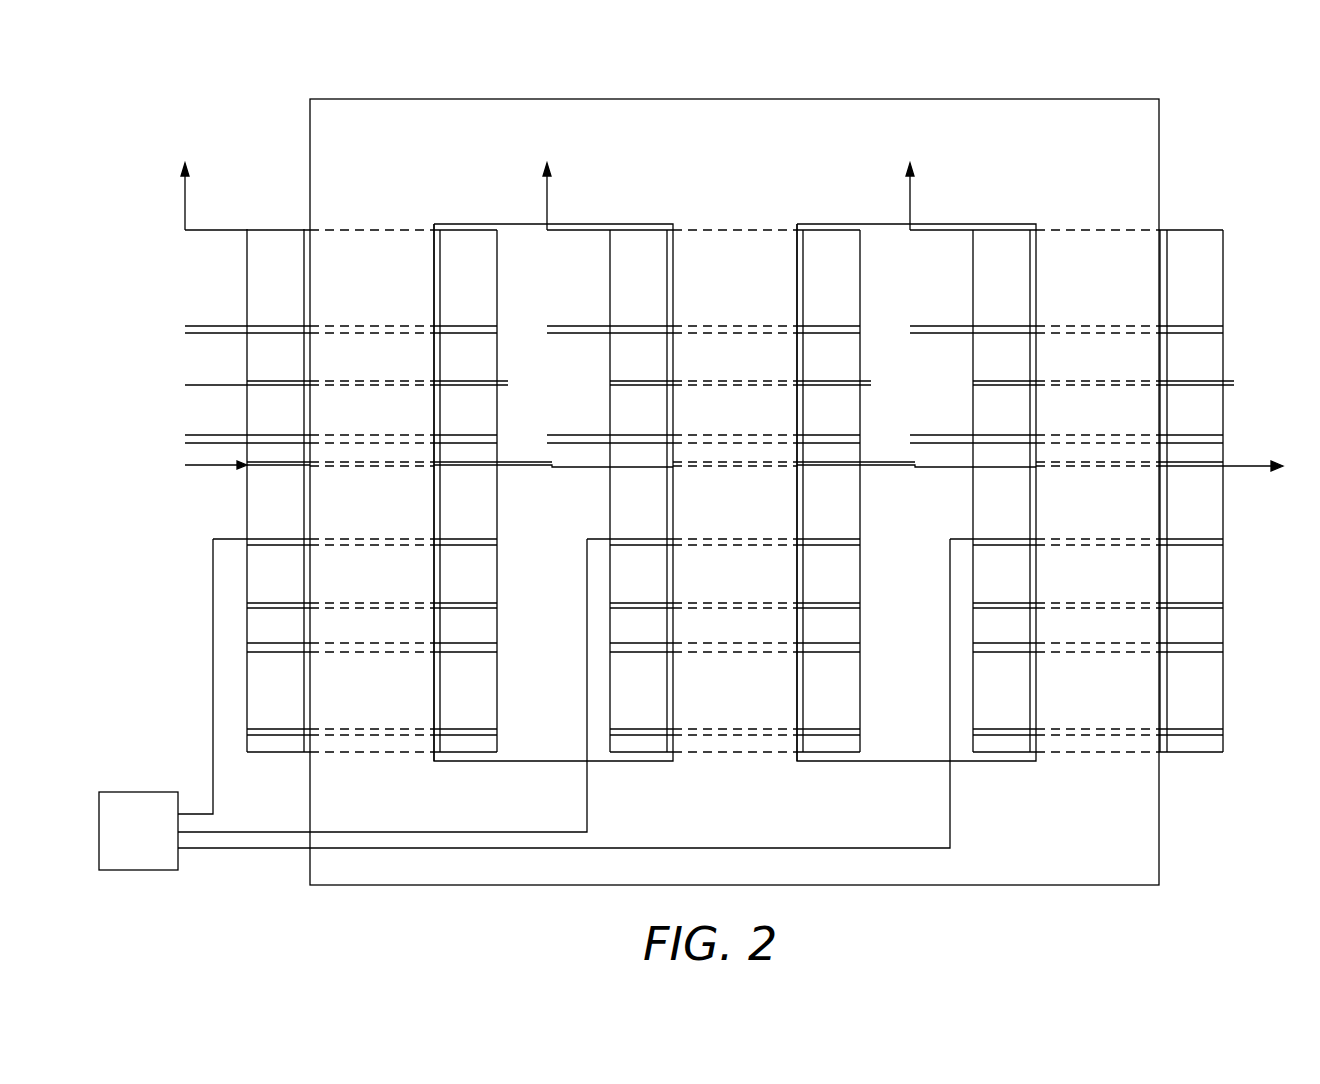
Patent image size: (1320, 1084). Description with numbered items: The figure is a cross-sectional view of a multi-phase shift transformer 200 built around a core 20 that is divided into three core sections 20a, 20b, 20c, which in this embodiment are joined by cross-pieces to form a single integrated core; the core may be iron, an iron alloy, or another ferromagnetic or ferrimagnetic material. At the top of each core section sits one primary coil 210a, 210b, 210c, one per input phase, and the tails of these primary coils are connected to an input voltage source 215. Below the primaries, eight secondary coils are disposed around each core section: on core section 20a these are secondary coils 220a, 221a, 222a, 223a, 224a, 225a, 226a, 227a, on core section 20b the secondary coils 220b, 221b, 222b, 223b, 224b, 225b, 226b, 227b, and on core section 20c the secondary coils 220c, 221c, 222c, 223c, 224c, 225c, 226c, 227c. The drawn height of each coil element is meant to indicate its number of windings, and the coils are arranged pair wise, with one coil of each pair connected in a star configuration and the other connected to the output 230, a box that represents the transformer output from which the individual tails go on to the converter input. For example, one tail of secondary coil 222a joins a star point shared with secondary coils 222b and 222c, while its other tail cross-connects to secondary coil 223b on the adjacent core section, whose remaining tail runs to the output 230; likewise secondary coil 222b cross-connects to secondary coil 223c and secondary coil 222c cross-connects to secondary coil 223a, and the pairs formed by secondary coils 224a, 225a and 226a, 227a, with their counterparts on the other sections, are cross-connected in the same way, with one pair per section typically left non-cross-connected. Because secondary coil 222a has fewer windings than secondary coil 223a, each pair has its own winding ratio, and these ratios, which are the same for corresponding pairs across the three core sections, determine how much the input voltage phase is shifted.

The multi-phase shift transformer 200 is at (1205, 82).
The core 20 is at (1138, 140).
The core section 20a is at (373, 768).
The core section 20b is at (737, 768).
The core section 20c is at (1102, 768).
The input voltage source 215 is at (183, 184).
The output 230 is at (148, 871).
The primary coil 210a is at (553, 278).
The secondary coil 220a is at (553, 357).
The secondary coil 221a is at (553, 410).
The secondary coil 222a is at (553, 439).
The secondary coil 223a is at (553, 515).
The secondary coil 224a is at (553, 574).
The secondary coil 225a is at (553, 625).
The secondary coil 226a is at (553, 690).
The secondary coil 227a is at (553, 743).
The primary coil 210b is at (916, 278).
The secondary coil 220b is at (916, 357).
The secondary coil 221b is at (916, 410).
The secondary coil 222b is at (916, 439).
The secondary coil 223b is at (916, 515).
The secondary coil 224b is at (916, 574).
The secondary coil 225b is at (916, 625).
The secondary coil 226b is at (916, 690).
The secondary coil 227b is at (916, 743).
The primary coil 210c is at (1214, 281).
The secondary coil 220c is at (1214, 360).
The secondary coil 221c is at (1214, 400).
The secondary coil 222c is at (1214, 456).
The secondary coil 223c is at (1214, 506).
The secondary coil 224c is at (1214, 576).
The secondary coil 225c is at (1214, 629).
The secondary coil 226c is at (1214, 694).
The secondary coil 227c is at (1214, 745).